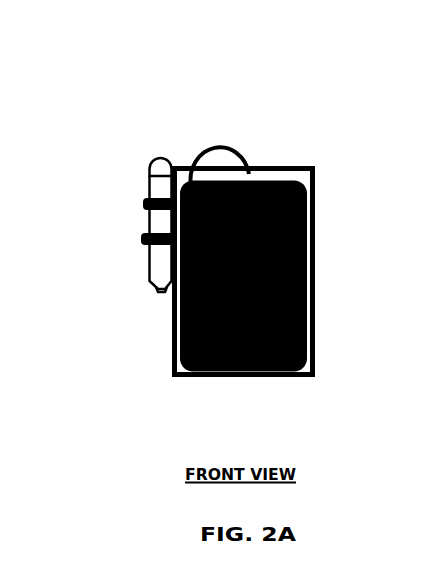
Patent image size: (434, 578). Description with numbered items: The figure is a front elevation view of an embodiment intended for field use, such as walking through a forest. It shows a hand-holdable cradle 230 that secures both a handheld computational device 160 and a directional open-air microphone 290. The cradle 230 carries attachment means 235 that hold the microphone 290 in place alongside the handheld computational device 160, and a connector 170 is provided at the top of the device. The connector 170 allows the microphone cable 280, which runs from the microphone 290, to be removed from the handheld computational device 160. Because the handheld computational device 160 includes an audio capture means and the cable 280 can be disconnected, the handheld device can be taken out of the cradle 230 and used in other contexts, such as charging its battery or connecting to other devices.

The handheld computational device 160 is at (305, 280).
The connector 170 is at (220, 136).
The hand-holdable cradle 230 is at (217, 281).
The attachment means 235 is at (135, 194).
The microphone cable 280 is at (150, 287).
The directional open-air microphone 290 is at (124, 214).